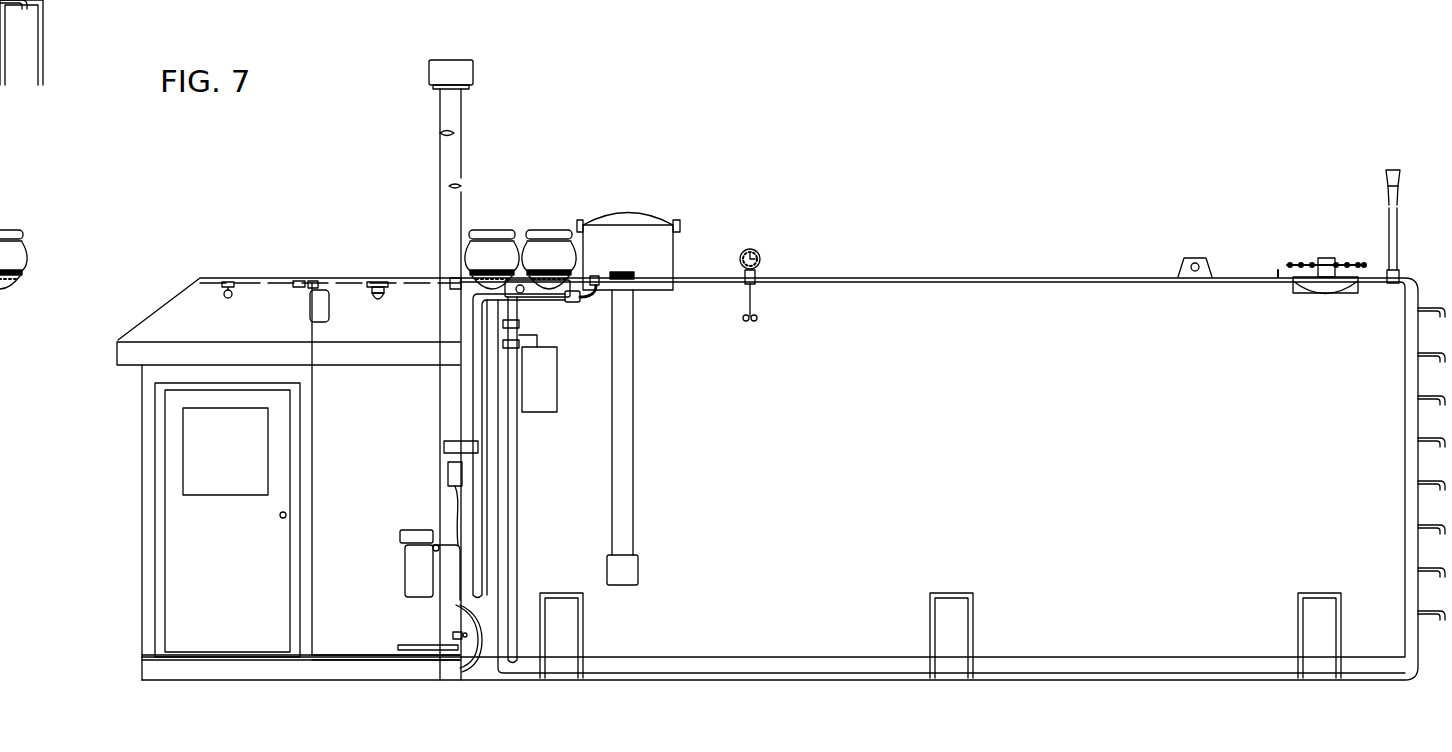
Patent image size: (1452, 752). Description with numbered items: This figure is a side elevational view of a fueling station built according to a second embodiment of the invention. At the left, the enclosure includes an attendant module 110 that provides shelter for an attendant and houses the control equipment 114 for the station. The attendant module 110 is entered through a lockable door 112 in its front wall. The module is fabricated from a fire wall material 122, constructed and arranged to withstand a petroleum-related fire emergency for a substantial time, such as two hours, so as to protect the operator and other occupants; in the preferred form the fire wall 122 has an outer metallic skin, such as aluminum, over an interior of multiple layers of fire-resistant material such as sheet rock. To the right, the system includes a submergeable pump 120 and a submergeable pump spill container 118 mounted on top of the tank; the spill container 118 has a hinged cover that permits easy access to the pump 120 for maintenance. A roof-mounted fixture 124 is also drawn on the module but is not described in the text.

The attendant module 110 is at (283, 274).
The lockable door 112 is at (218, 543).
The control equipment 114 is at (330, 477).
The submergeable pump spill container 118 is at (623, 212).
The submergeable pump 120 is at (637, 572).
The fire wall material 122 is at (358, 607).
The sprinkler 124 is at (395, 288).